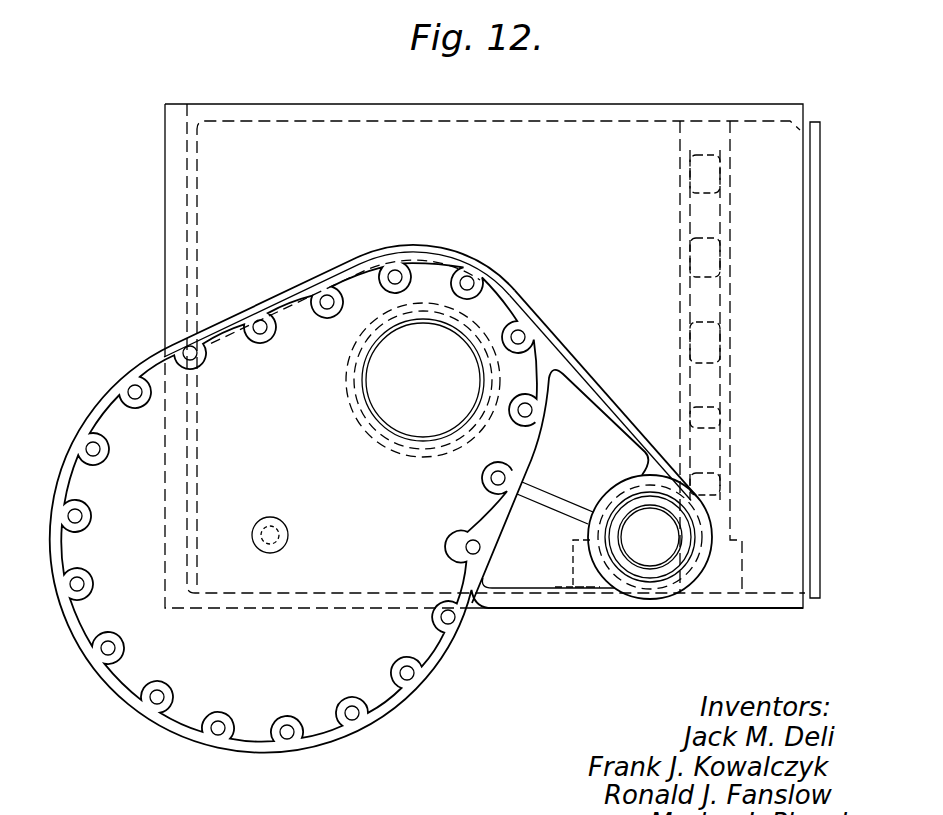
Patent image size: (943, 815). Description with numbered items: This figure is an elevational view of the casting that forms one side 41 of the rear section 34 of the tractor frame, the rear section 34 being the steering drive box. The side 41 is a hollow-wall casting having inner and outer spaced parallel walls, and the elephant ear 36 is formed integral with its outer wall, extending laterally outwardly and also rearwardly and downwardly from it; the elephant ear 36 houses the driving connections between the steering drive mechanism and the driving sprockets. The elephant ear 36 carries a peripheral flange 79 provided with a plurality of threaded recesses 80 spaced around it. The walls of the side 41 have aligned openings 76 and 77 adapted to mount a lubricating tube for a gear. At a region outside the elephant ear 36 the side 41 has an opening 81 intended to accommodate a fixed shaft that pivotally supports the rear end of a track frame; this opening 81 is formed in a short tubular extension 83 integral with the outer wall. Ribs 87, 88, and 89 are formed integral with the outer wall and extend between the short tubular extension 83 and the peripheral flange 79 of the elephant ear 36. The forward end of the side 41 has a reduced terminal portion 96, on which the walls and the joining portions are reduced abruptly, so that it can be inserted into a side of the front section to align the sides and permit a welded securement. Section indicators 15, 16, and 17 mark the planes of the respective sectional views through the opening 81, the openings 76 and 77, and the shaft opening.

The rear section 34 is at (340, 104).
The side 41 is at (233, 130).
The reduced terminal portion 96 is at (812, 135).
The elephant ear 36 is at (125, 432).
The rib 87 is at (592, 372).
The rib 88 is at (555, 505).
The rib 89 is at (548, 609).
The peripheral flange 79 is at (110, 672).
The threaded recesses 80 is at (76, 583).
The short tubular extension 83 is at (683, 580).
The opening 81 is at (647, 562).
The opening 76 is at (280, 541).
The opening 77 is at (282, 527).
The section line 15 is at (678, 690).
The section line 16 is at (270, 585).
The section line 17 is at (423, 505).